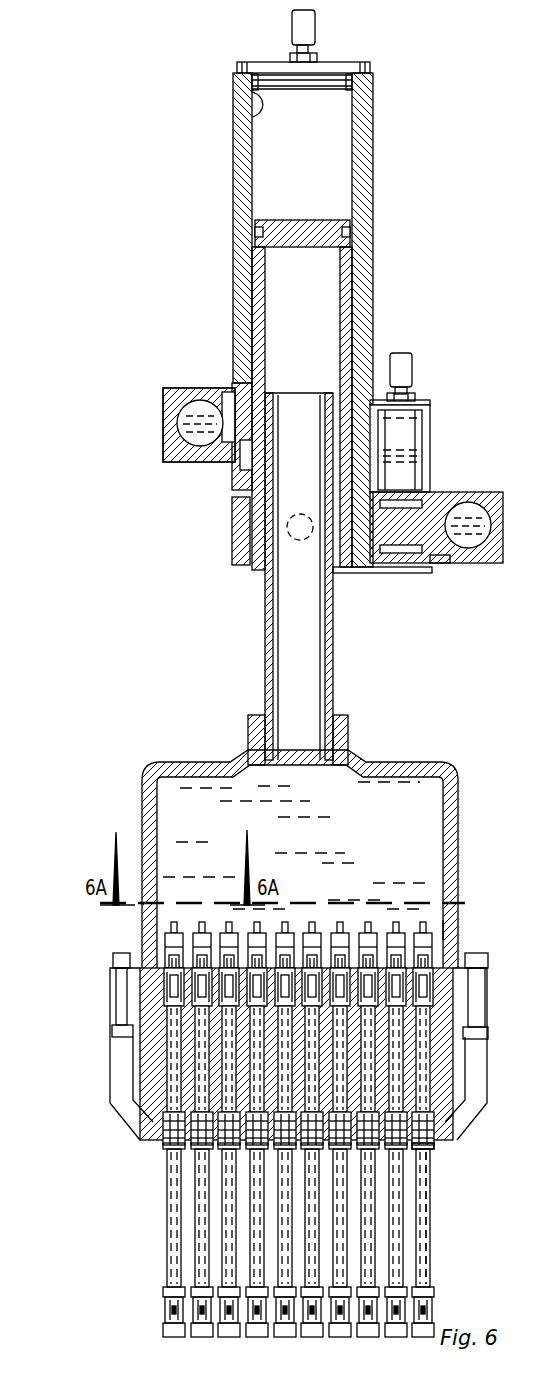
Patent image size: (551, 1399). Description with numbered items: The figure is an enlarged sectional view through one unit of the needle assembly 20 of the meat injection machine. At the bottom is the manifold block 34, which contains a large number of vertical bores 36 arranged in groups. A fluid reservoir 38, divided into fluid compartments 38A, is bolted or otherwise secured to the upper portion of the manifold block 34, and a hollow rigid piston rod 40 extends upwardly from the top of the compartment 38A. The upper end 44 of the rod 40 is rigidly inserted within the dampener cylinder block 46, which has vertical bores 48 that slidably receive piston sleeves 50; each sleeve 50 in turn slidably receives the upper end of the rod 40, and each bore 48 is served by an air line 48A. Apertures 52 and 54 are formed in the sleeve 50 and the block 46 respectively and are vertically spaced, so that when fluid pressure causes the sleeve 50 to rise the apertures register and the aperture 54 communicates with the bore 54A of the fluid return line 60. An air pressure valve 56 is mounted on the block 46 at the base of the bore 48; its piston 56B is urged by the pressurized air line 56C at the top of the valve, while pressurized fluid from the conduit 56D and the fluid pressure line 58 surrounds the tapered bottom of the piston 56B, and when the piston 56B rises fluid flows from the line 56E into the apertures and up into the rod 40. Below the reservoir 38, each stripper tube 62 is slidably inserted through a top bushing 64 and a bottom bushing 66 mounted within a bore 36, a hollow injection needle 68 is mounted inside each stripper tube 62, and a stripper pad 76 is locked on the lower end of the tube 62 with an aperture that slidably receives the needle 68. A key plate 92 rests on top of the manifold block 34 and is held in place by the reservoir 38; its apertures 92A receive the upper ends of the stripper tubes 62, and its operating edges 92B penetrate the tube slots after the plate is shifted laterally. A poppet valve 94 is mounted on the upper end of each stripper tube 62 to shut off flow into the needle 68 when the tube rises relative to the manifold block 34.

The needle assembly 20 is at (135, 1181).
The manifold block 34 is at (150, 1046).
The vertical bores 36 is at (140, 1066).
The fluid reservoir 38 is at (142, 808).
The fluid compartments 38A is at (188, 822).
The hollow rigid piston rod 40 is at (266, 587).
The upper end of rod 44 is at (293, 395).
The dampener cylinder block 46 is at (233, 100).
The vertical bores 48 is at (252, 82).
The air line 48A is at (300, 24).
The piston sleeve 50 is at (251, 262).
The aperture 52 is at (240, 552).
The aperture 54 is at (215, 392).
The bore 54A is at (200, 390).
The air pressure valve 56 is at (432, 443).
The piston 56B is at (395, 492).
The pressurized air line 56C is at (410, 370).
The conduit 56D is at (448, 578).
The line 56E is at (468, 545).
The fluid pressure line 58 is at (480, 565).
The fluid return line 60 is at (176, 373).
The stripper tube 62 is at (170, 1203).
The top bushing 64 is at (485, 1005).
The bottom bushing 66 is at (432, 1150).
The hollow injection needle 68 is at (425, 1199).
The stripper pad 76 is at (165, 1285).
The key plate 92 is at (428, 937).
The apertures 92A is at (550, 385).
The operating edges 92B is at (538, 273).
The poppet valve 94 is at (457, 930).